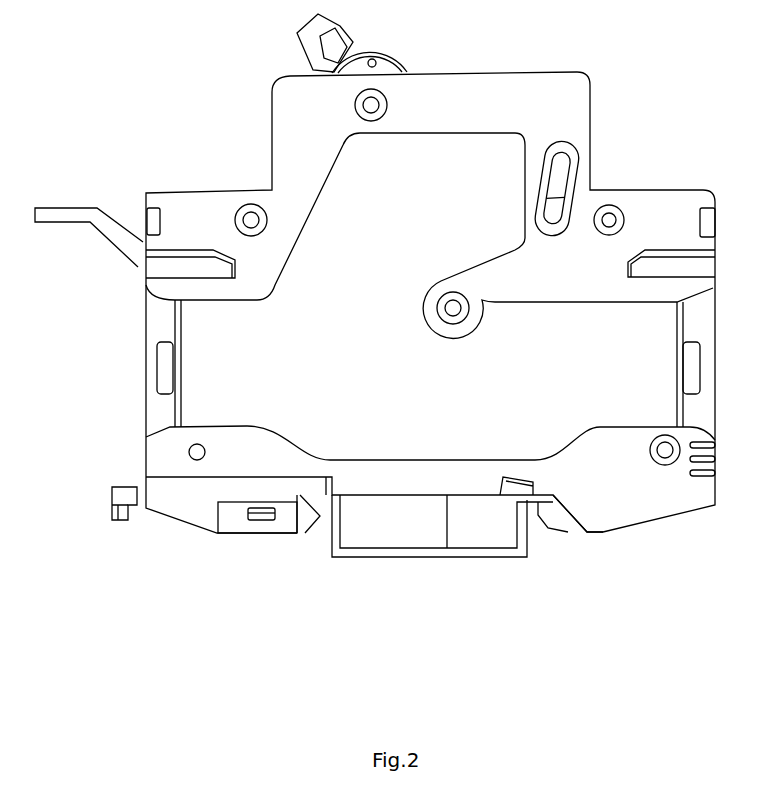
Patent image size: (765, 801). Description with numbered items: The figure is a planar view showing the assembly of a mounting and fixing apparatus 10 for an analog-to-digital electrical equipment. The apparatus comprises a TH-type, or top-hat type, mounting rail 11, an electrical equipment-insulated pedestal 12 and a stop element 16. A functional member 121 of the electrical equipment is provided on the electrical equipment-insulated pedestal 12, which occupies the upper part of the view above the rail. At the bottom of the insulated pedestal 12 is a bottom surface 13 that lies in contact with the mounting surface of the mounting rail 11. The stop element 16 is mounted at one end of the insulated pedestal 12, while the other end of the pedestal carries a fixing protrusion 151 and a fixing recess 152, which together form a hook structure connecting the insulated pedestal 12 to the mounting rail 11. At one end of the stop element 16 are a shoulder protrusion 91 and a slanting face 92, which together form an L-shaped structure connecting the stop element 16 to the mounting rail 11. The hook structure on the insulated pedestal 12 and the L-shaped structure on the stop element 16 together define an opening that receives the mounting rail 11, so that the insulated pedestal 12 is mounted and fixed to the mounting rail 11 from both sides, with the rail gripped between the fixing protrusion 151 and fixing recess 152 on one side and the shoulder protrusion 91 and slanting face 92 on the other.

The circuit breaker / mounting device 10 is at (143, 543).
The TH-type mounting rail 11 is at (417, 556).
The electrical equipment-insulated pedestal 12 is at (165, 450).
The functional member 121 is at (380, 393).
The bottom surface 13 is at (447, 560).
The stop element 16 is at (170, 493).
The shoulder protrusion 91 is at (266, 525).
The slanting face 92 is at (295, 504).
The fixing protrusion 151 is at (546, 520).
The fixing recess 152 is at (555, 497).